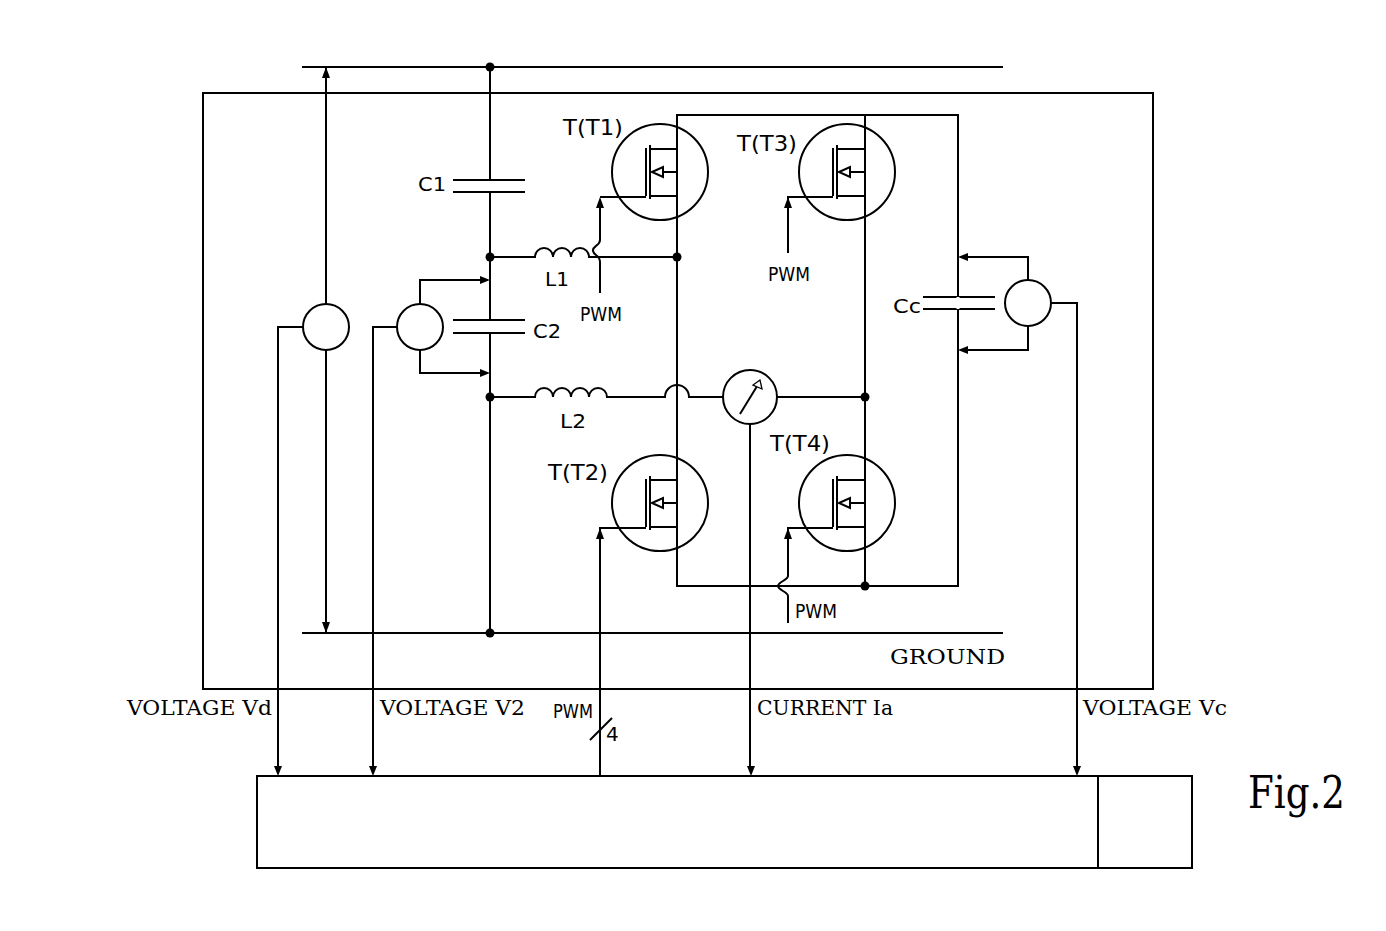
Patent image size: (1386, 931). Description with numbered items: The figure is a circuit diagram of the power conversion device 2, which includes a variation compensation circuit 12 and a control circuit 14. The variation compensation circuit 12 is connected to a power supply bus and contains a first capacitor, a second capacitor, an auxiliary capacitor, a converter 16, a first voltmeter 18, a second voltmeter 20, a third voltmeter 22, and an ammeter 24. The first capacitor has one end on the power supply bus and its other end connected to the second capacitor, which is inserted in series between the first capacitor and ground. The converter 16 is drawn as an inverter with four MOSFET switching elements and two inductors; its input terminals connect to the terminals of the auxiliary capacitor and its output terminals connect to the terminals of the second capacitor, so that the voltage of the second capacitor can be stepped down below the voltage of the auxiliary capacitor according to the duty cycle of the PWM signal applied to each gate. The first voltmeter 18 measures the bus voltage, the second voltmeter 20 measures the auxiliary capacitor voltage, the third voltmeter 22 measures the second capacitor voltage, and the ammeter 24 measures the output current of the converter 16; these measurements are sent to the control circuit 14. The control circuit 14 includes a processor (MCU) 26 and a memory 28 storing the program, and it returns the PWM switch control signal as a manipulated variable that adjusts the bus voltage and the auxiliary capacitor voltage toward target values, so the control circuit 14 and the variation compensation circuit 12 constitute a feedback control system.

The power conversion device 2 is at (746, 28).
The variation compensation circuit 12 is at (1160, 215).
The control circuit 14 is at (944, 874).
The converter 16 is at (965, 173).
The first voltmeter 18 is at (310, 308).
The second voltmeter 20 is at (1045, 283).
The third voltmeter 22 is at (405, 308).
The ammeter 24 is at (771, 378).
The processor (MCU) 26 is at (740, 870).
The memory 28 is at (1127, 870).